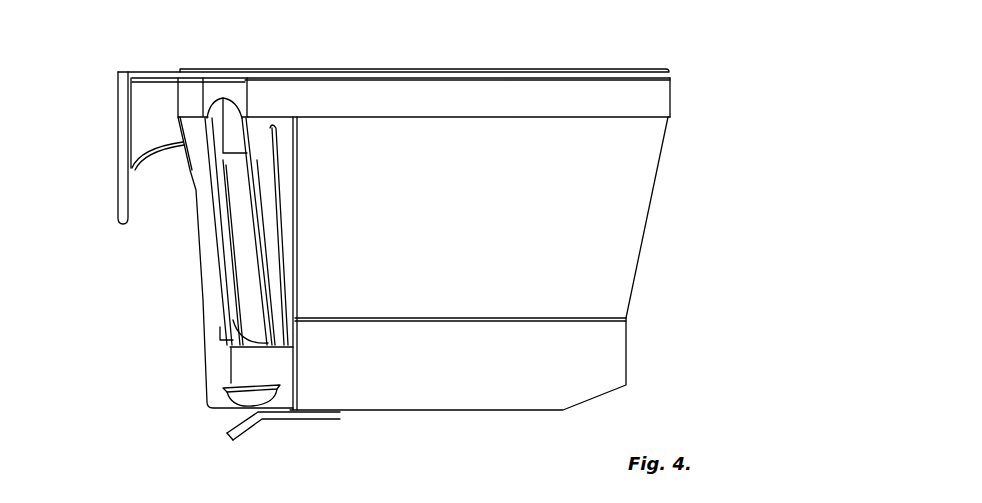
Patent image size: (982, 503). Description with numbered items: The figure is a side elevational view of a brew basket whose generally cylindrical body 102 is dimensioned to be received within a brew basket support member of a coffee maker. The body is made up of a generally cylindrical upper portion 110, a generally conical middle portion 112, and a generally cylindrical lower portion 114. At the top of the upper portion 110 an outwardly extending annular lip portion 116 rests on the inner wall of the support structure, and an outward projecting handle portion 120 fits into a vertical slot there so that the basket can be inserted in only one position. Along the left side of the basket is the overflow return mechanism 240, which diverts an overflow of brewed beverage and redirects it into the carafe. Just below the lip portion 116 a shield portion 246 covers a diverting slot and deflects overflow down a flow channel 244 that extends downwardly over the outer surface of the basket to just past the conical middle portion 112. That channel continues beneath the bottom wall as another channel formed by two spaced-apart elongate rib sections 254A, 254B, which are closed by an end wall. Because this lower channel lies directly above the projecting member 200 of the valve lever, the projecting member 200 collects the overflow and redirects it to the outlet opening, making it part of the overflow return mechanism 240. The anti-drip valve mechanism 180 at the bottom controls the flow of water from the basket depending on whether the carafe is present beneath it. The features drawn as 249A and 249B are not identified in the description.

The body 102 is at (798, 119).
The upper portion 110 is at (672, 97).
The middle portion 112 is at (645, 228).
The lower portion 114 is at (626, 352).
The lip portion 116 is at (680, 73).
The handle portion 120 is at (122, 112).
The anti-drip valve mechanism 180 is at (268, 421).
The projecting member 200 is at (225, 410).
The overflow return mechanism 240 is at (199, 278).
The flow channel 244 is at (253, 306).
The shield portion 246 is at (215, 90).
The first arm 249A is at (210, 177).
The second arm 249B is at (248, 197).
The elongate rib section 254A is at (230, 347).
The elongate rib section 254B is at (290, 348).